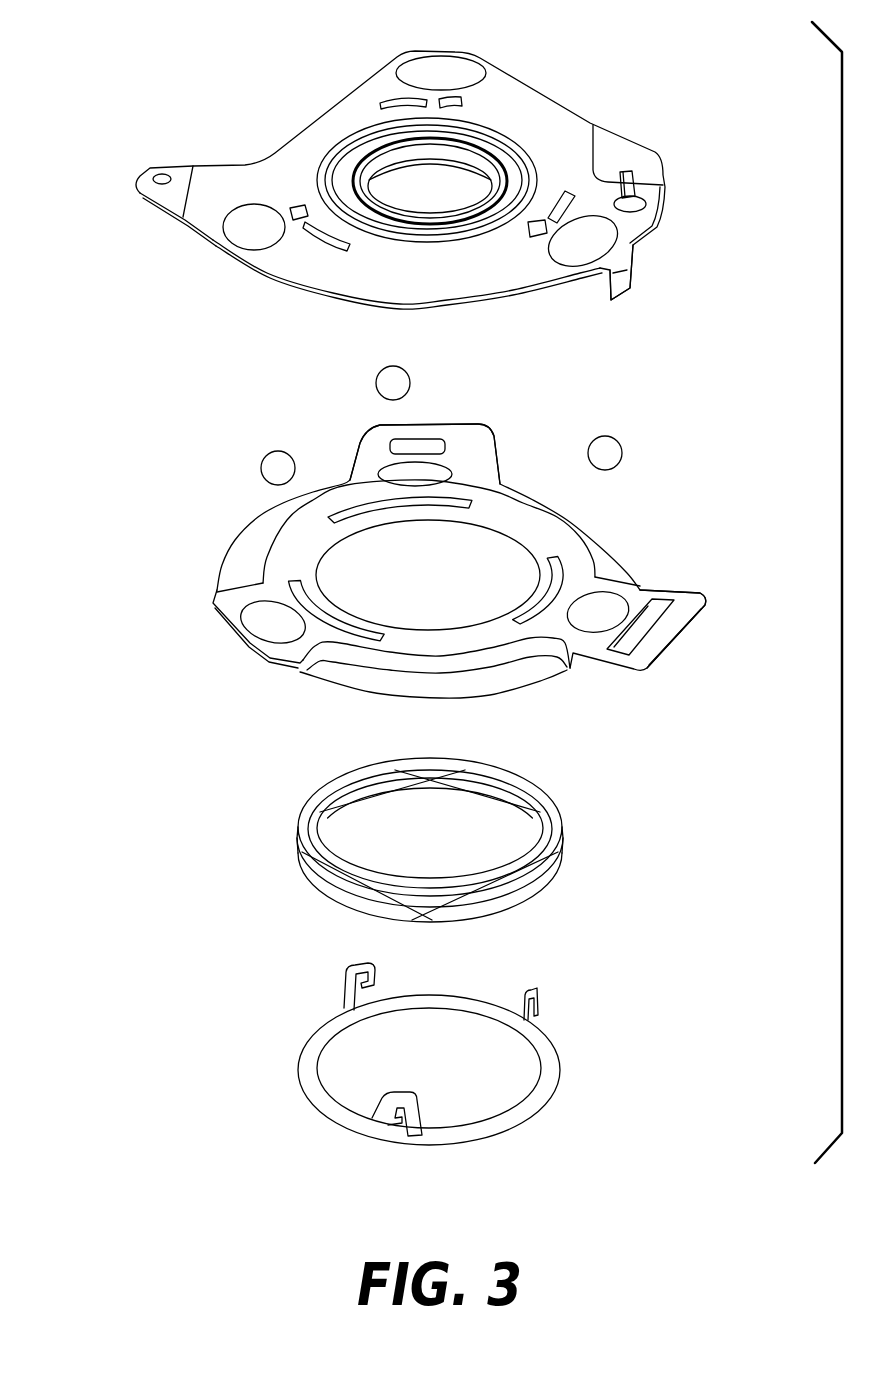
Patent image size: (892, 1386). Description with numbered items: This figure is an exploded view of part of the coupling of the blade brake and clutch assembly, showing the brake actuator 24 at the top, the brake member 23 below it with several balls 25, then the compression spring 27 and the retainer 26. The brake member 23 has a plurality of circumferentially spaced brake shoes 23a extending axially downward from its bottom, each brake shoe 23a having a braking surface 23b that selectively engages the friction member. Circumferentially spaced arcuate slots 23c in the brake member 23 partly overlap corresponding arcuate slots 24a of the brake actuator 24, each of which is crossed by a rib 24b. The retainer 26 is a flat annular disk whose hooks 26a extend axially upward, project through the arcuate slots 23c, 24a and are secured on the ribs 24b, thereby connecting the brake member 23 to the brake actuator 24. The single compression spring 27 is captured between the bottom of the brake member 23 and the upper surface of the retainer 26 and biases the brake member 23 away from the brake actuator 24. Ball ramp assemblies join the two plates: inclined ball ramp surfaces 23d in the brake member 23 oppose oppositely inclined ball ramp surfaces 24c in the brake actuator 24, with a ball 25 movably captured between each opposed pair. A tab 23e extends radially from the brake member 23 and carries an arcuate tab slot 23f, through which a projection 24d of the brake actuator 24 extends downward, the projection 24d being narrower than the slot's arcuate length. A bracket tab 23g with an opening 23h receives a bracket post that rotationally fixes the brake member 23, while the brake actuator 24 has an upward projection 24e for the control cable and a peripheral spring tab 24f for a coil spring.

The brake member 23 is at (726, 500).
The brake shoe 23a is at (613, 533).
The braking surface 23b is at (492, 696).
The arcuate slot 23c is at (400, 505).
The ball ramp surface 23d is at (455, 477).
The tab 23e is at (703, 610).
The tab slot 23f is at (650, 640).
The bracket tab 23g is at (360, 442).
The opening 23h is at (446, 435).
The brake actuator 24 is at (182, 128).
The arcuate slot 24a is at (560, 190).
The rib 24b is at (530, 233).
The ball ramp surface 24c is at (463, 70).
The projection 24d is at (640, 273).
The projection 24e is at (627, 148).
The spring tab 24f is at (150, 196).
The ball 25 is at (375, 383).
The retainer 26 is at (597, 1079).
The hook 26a is at (343, 990).
The compression spring 27 is at (596, 831).